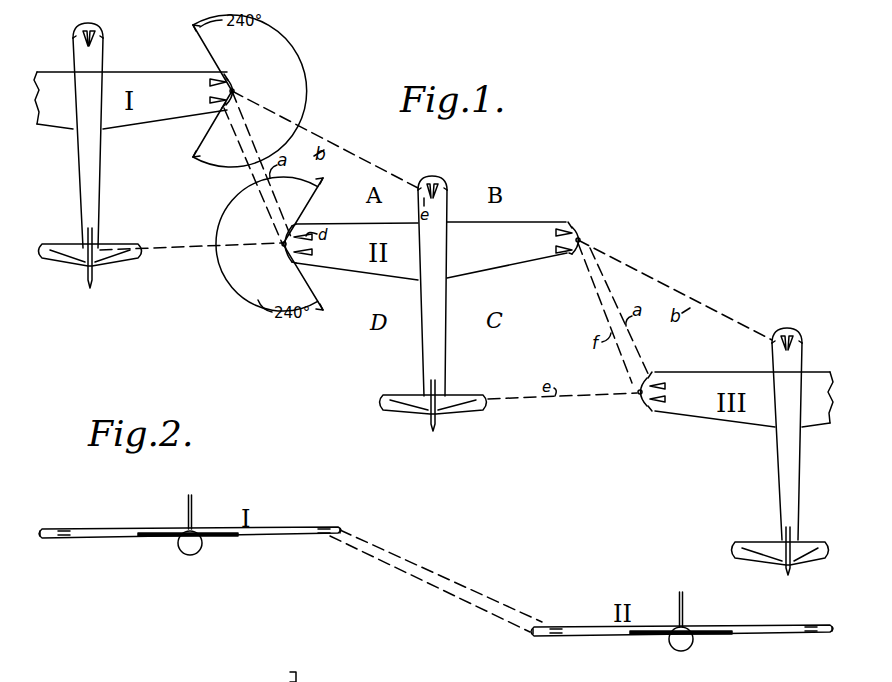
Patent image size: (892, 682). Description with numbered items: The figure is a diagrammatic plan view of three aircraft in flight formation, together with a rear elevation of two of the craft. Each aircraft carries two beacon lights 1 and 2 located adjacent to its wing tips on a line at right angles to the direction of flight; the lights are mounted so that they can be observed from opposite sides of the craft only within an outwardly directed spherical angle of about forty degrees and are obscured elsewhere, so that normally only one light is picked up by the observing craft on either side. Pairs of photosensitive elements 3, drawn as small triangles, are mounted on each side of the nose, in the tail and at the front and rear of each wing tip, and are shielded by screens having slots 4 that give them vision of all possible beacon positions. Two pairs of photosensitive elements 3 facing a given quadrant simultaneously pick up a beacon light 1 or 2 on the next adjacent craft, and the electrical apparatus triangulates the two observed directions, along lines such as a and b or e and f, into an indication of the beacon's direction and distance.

In FIG. 1, the beacon light 1 is at (282, 245).
In FIG. 2, the beacon light 1 is at (42, 531).
In FIG. 1, the beacon light 2 is at (235, 89).
In FIG. 2, the beacon light 2 is at (341, 529).
In FIG. 1, the photosensitive elements 3 is at (210, 101).
In FIG. 2, the photosensitive elements 3 is at (64, 531).
In FIG. 1, the slots 4 is at (226, 80).
In FIG. 2, the slots 4 is at (304, 680).